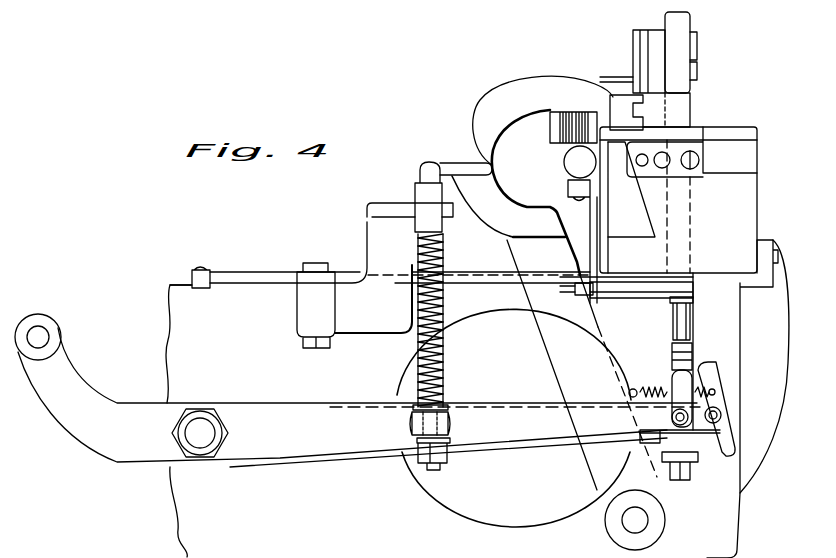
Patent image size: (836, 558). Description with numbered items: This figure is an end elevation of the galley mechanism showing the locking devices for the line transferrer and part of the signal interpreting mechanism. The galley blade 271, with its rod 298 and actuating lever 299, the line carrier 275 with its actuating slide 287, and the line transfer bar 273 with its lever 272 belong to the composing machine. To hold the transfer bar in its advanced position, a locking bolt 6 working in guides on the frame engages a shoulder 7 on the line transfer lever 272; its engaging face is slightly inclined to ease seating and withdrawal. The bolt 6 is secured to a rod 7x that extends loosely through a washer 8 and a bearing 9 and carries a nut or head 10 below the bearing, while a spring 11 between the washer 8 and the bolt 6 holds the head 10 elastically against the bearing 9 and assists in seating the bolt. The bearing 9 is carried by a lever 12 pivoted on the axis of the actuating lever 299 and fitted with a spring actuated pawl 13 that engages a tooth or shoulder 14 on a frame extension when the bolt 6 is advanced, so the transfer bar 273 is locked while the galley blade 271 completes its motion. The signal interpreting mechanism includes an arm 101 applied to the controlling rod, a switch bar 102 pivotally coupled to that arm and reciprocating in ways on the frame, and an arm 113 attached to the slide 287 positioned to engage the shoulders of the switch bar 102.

The locking bolt 6 is at (415, 168).
The shoulder 7 is at (450, 165).
The rod 7x is at (440, 357).
The washer 8 is at (413, 410).
The bearing 9 is at (448, 423).
The nut or head 10 is at (410, 452).
The spring 11 is at (422, 335).
The lever 12 is at (367, 442).
The spring actuated pawl 13 is at (718, 370).
The tooth or shoulder 14 is at (728, 457).
The arm 101 is at (640, 287).
The switch bar 102 is at (588, 295).
The arm 113 is at (595, 227).
The galley blade 271 is at (625, 102).
The line transfer lever 272 is at (473, 110).
The line transfer bar 273 is at (635, 43).
The line carrier 275 is at (612, 80).
The actuating slide 287 is at (572, 178).
The rod 298 is at (668, 340).
The actuating lever 299 is at (527, 447).